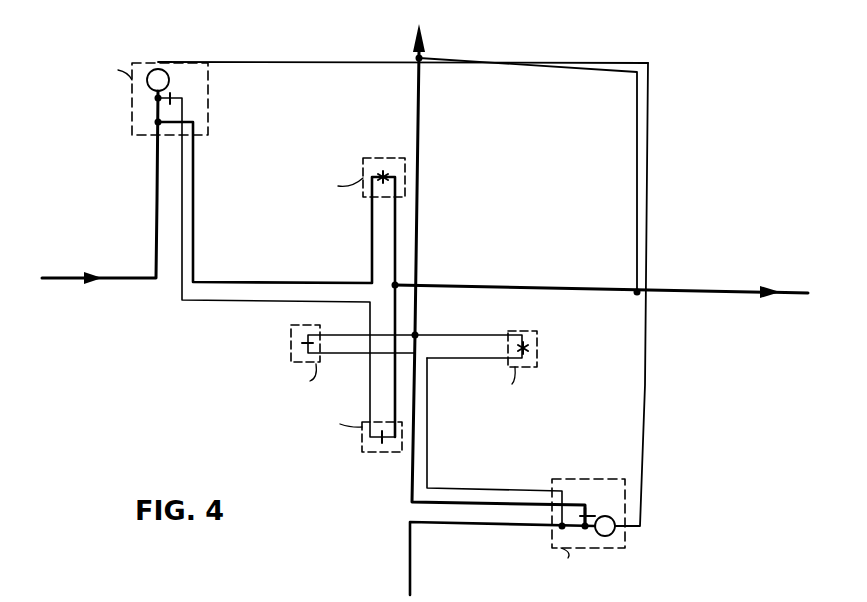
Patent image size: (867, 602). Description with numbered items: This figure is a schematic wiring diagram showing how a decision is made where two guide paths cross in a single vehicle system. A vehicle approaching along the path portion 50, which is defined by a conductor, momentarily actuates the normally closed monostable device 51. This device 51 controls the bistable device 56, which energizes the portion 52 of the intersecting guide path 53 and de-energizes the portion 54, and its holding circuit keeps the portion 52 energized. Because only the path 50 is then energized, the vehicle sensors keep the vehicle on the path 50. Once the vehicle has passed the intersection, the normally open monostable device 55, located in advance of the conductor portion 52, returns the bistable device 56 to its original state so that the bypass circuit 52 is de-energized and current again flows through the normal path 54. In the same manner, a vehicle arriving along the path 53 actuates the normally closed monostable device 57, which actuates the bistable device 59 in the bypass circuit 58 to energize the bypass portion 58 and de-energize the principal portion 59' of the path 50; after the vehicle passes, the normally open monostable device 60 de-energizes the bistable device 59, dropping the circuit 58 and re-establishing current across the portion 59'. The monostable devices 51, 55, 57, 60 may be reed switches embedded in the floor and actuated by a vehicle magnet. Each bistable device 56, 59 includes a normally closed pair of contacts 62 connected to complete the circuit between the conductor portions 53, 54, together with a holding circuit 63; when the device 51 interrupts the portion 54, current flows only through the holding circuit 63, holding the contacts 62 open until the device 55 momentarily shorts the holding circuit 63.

The path portion 50 is at (115, 280).
The normally closed monostable device 51 is at (291, 350).
The portion of intersecting guide path 52 is at (643, 386).
The intersecting guide path 53 is at (408, 548).
The portion of intersecting guide path 54 is at (408, 480).
The normally open monostable device 55 is at (532, 368).
The bistable device 56 is at (627, 540).
The normally closed monostable device 57 is at (362, 450).
The bypass portion 58 is at (312, 62).
The bistable device 59 is at (152, 80).
The principal portion of path 59' is at (483, 267).
The normally open monostable device 60 is at (395, 158).
The normally closed pair of contacts 62 is at (590, 513).
The holding circuit 63 is at (600, 538).